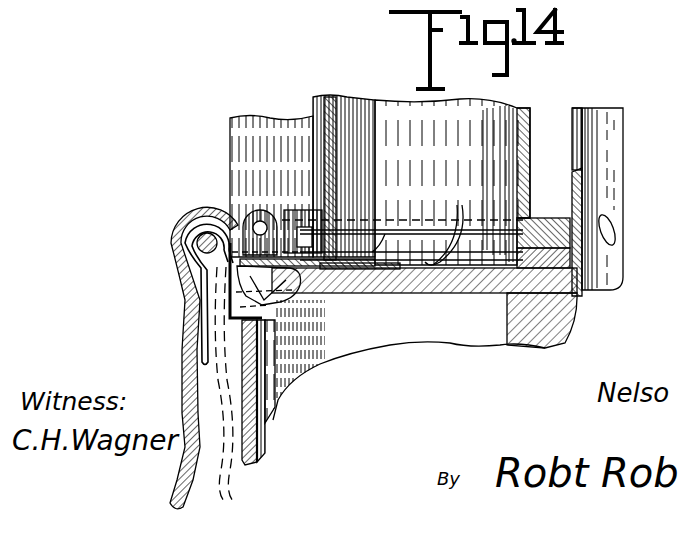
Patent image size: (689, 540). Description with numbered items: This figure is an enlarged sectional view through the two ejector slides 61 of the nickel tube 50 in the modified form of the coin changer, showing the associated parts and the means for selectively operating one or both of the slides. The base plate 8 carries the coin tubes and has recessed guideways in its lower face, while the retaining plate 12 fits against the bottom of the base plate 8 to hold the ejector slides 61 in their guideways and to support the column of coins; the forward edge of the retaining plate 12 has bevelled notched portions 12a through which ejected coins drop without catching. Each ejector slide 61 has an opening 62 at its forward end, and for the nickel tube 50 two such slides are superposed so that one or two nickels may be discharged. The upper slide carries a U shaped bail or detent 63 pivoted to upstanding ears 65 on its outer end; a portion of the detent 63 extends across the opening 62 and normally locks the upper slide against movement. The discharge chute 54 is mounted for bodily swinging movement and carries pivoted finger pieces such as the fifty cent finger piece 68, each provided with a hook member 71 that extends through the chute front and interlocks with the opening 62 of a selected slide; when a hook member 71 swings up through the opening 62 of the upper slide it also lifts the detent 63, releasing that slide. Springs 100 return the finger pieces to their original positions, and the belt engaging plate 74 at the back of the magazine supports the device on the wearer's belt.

The nickel tube 50 is at (458, 117).
The base plate 8 is at (544, 220).
The belt engaging plate 74 is at (600, 139).
The retaining plate 12 is at (577, 310).
The notched or cut away portions 12a is at (372, 320).
The discharge chute 54 is at (262, 412).
The fifty cent finger piece 68 is at (190, 346).
The springs 100 is at (204, 307).
The upstanding ears 65 is at (272, 213).
The U shaped bail or detent 63 is at (298, 222).
The opening 62 is at (345, 262).
The ejector slide 61 is at (442, 230).
The hook member 71 is at (283, 302).